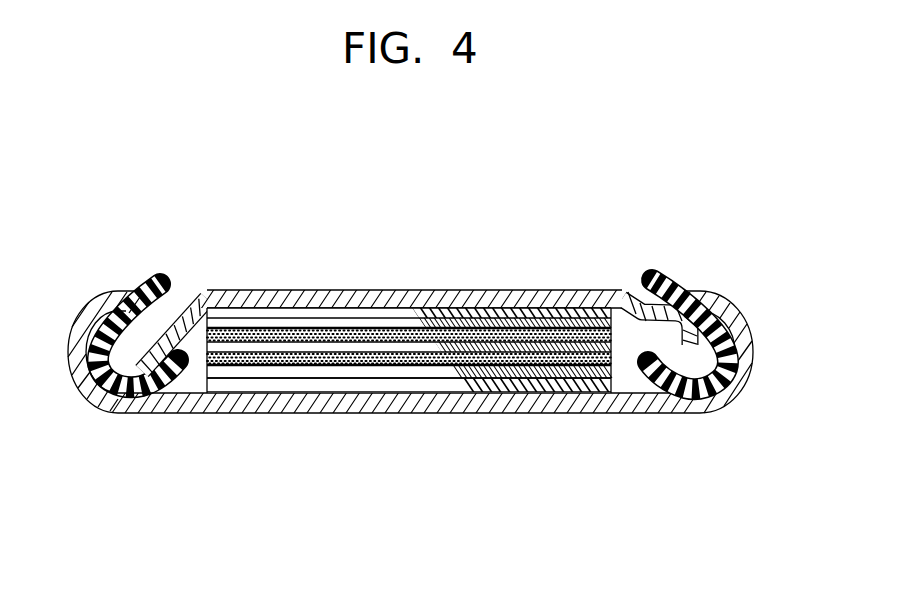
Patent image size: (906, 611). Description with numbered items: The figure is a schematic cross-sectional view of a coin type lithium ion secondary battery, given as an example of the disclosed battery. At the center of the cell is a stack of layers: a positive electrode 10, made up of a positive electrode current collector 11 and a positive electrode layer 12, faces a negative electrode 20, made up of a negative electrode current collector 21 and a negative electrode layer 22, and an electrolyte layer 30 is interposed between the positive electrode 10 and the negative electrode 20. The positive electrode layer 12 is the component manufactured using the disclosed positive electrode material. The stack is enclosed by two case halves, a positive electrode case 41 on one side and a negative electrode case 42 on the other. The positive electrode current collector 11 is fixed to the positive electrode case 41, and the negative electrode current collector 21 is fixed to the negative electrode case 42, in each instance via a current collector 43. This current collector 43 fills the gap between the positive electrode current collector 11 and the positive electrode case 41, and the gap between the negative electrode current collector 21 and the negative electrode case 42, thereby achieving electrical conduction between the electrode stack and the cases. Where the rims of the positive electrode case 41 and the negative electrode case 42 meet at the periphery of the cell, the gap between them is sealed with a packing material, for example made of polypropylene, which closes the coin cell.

The positive electrode 10 is at (409, 443).
The positive electrode current collector 11 is at (430, 372).
The positive electrode layer 12 is at (468, 372).
The negative electrode 20 is at (409, 256).
The negative electrode current collector 21 is at (487, 322).
The negative electrode layer 22 is at (542, 334).
The electrolyte layer 30 is at (387, 355).
The positive electrode case 41 is at (570, 406).
The negative electrode case 42 is at (350, 292).
The current collector 43 is at (408, 312).